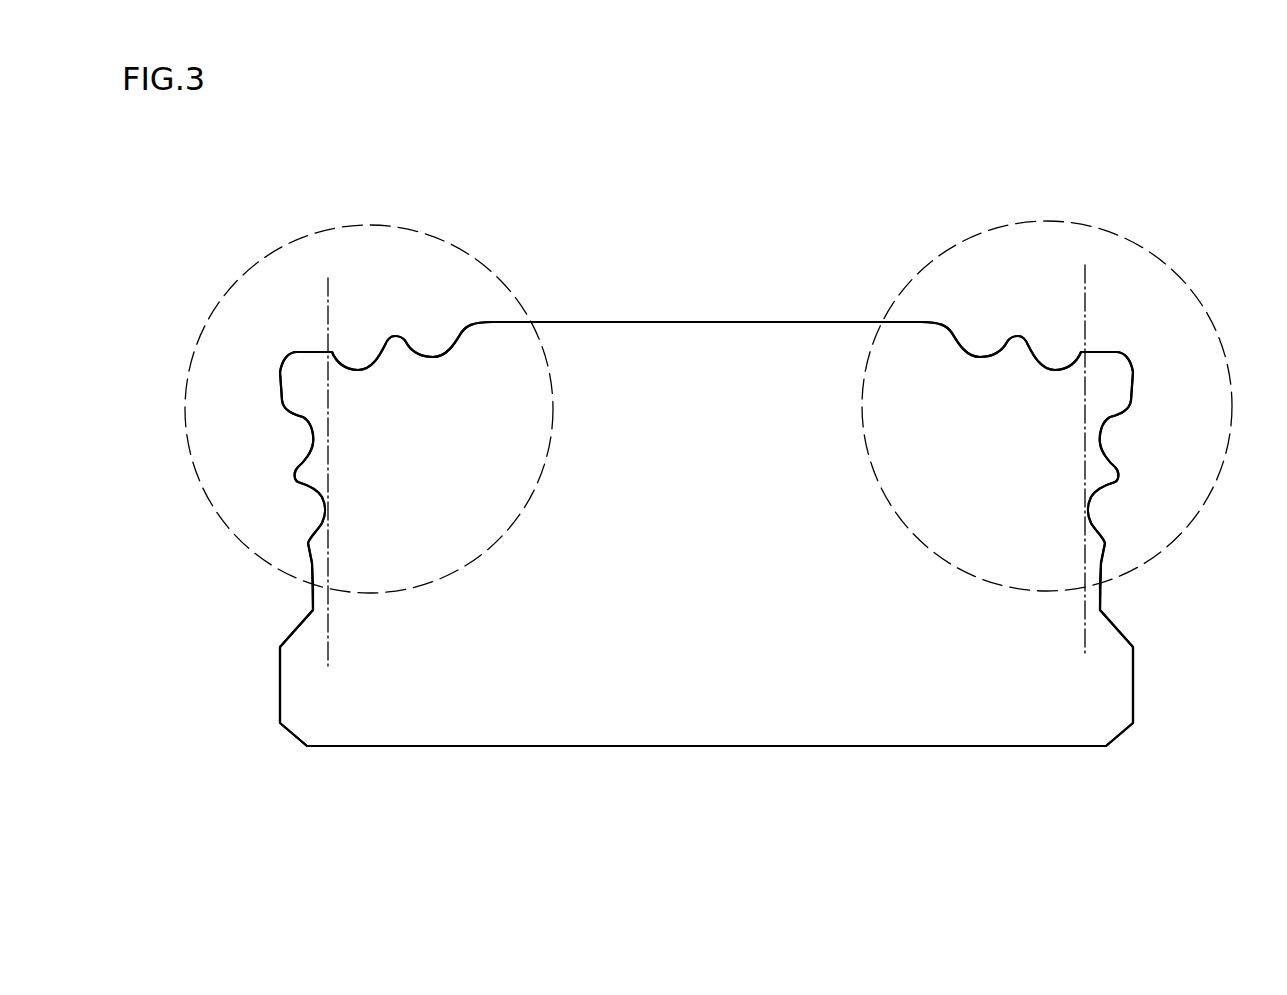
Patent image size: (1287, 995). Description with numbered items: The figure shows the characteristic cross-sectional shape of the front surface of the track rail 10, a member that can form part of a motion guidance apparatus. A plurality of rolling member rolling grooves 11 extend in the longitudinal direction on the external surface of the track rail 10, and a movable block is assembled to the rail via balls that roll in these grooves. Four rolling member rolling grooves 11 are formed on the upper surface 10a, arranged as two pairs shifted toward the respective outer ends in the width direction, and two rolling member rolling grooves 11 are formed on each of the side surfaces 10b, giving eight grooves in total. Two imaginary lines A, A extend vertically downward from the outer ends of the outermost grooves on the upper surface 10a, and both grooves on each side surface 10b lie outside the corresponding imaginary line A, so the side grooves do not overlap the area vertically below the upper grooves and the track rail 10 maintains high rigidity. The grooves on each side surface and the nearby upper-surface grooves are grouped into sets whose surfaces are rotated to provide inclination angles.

The track rail 10 is at (623, 170).
The upper surface 10a is at (753, 320).
The side surface 10b is at (310, 597).
The rolling member rolling groove 11 is at (438, 355).
The imaginary line A is at (327, 312).